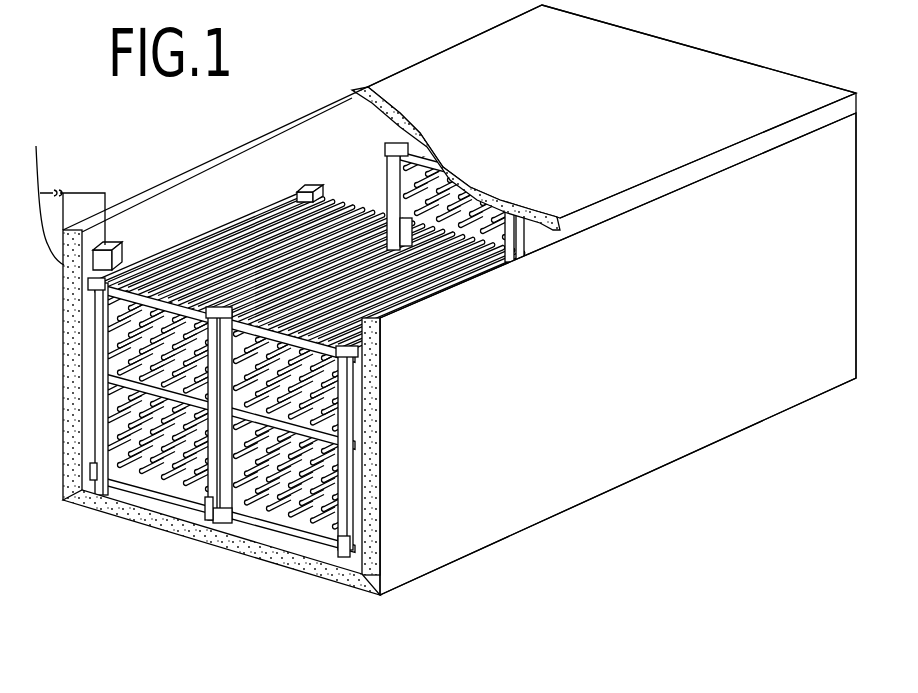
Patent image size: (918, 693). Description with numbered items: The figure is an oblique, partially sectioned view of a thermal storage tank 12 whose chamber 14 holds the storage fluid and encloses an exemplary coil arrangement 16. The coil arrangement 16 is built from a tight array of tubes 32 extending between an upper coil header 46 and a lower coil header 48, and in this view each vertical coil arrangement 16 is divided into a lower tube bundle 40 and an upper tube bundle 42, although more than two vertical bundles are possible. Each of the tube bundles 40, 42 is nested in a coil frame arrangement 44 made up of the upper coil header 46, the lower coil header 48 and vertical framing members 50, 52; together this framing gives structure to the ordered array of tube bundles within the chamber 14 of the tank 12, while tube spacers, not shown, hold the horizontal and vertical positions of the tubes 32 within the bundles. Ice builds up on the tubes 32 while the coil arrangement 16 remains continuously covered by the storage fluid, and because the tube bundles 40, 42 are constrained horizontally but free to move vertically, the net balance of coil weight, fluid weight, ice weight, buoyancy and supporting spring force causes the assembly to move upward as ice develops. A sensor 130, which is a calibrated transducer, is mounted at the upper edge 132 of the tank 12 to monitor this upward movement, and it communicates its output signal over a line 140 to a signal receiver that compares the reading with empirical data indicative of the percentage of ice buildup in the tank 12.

The tank 12 is at (859, 166).
The chamber 14 is at (172, 214).
The coil arrangement 16 is at (108, 342).
The tubes 32 is at (336, 207).
The lower tube bundle 40 is at (372, 519).
The upper tube bundle 42 is at (372, 400).
The coil frame arrangement 44 is at (90, 316).
The upper coil header 46 is at (100, 302).
The lower coil header 48 is at (112, 382).
The vertical framing member 50 is at (96, 446).
The vertical framing member 52 is at (212, 468).
The sensor 130 is at (46, 192).
The upper edge 132 is at (73, 232).
The line 140 is at (98, 197).